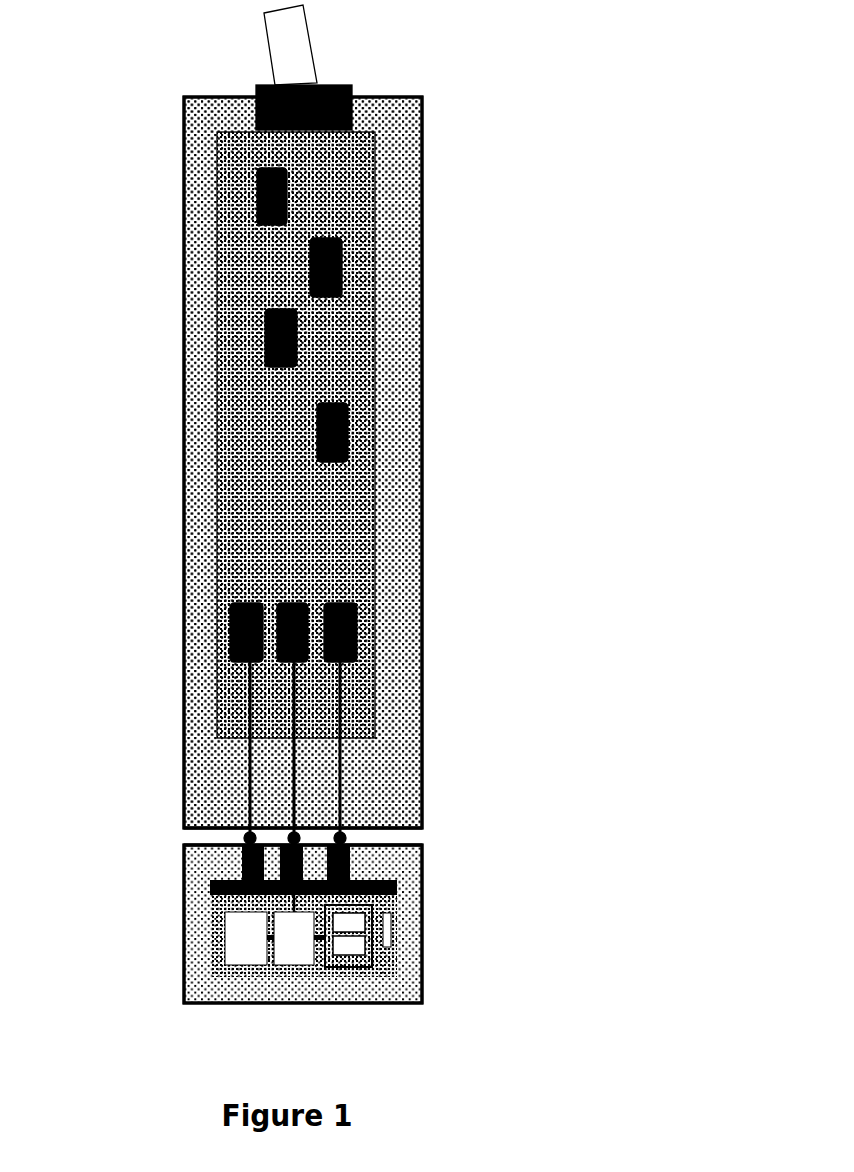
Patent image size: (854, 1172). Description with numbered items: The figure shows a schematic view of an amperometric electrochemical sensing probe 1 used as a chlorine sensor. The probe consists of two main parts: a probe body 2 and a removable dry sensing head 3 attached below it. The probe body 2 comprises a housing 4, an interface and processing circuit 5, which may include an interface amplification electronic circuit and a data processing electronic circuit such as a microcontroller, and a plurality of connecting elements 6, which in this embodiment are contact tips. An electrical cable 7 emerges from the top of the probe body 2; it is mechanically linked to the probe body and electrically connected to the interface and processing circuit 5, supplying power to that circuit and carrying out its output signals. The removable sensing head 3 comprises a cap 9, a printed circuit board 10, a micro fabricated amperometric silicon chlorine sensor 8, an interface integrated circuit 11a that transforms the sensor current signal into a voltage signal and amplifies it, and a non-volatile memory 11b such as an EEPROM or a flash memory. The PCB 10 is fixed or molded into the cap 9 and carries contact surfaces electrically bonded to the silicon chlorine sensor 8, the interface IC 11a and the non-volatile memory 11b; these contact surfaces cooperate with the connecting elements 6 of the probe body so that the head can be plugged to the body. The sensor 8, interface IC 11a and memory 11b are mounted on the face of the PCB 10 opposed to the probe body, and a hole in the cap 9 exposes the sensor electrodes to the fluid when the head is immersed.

The sensor device 1 is at (146, 146).
The probe body 2 is at (486, 115).
The removable dry sensing head 3 is at (463, 966).
The housing 4 is at (423, 297).
The interface and processing circuit 5 is at (378, 500).
The connecting elements 6 is at (336, 837).
The electrical cable 7 is at (312, 50).
The micro fabricated amperometric silicon chlorine sensor 8 is at (373, 967).
The cap 9 is at (182, 878).
The PCB 10 is at (398, 905).
The interface integrated circuit 11a is at (280, 965).
The non-volatile memory 11b is at (225, 947).